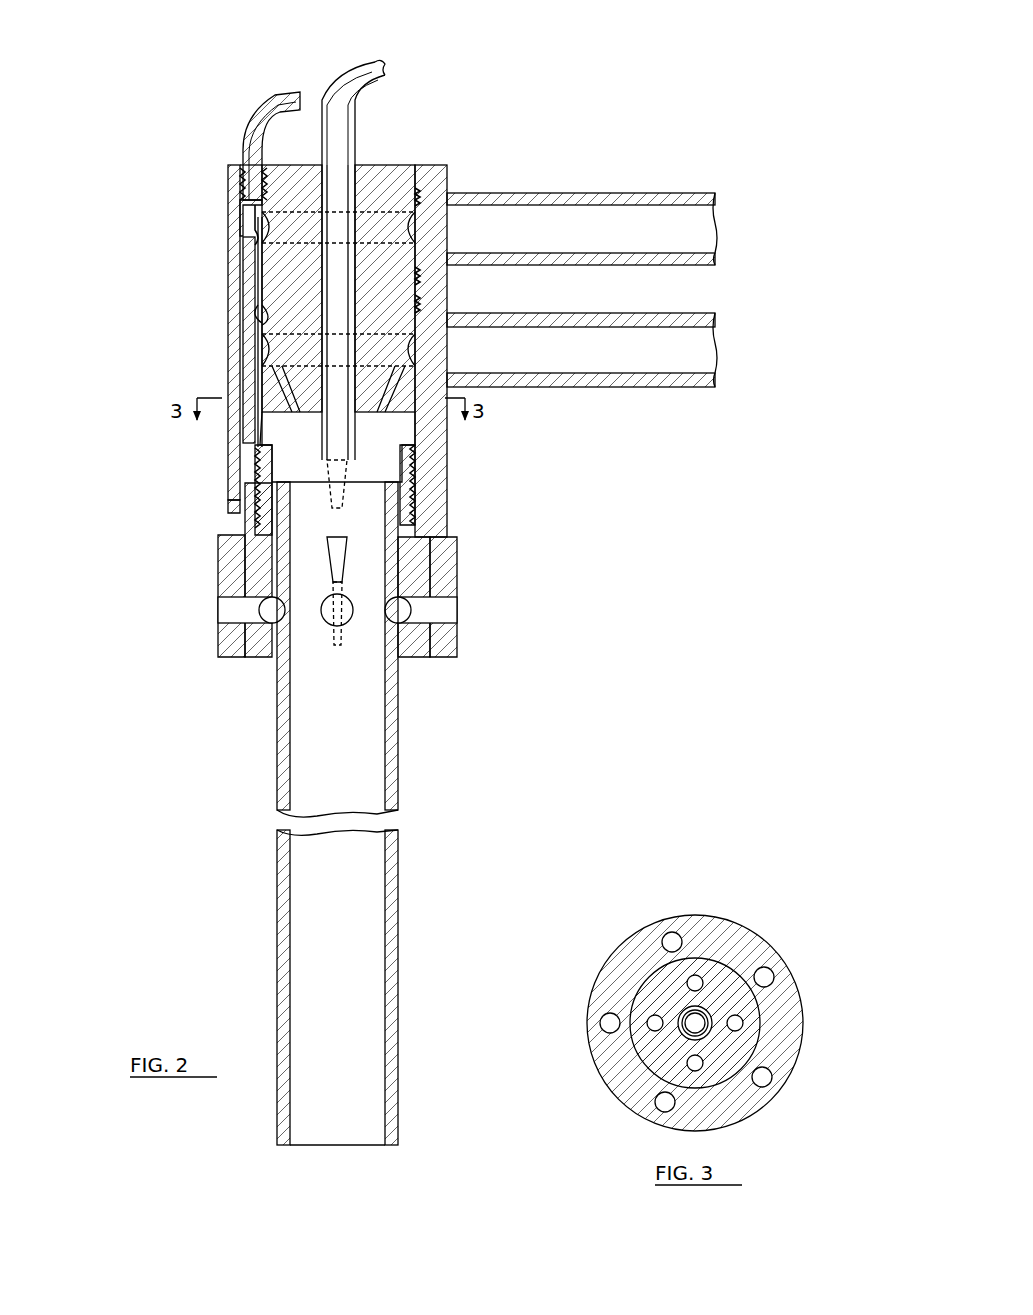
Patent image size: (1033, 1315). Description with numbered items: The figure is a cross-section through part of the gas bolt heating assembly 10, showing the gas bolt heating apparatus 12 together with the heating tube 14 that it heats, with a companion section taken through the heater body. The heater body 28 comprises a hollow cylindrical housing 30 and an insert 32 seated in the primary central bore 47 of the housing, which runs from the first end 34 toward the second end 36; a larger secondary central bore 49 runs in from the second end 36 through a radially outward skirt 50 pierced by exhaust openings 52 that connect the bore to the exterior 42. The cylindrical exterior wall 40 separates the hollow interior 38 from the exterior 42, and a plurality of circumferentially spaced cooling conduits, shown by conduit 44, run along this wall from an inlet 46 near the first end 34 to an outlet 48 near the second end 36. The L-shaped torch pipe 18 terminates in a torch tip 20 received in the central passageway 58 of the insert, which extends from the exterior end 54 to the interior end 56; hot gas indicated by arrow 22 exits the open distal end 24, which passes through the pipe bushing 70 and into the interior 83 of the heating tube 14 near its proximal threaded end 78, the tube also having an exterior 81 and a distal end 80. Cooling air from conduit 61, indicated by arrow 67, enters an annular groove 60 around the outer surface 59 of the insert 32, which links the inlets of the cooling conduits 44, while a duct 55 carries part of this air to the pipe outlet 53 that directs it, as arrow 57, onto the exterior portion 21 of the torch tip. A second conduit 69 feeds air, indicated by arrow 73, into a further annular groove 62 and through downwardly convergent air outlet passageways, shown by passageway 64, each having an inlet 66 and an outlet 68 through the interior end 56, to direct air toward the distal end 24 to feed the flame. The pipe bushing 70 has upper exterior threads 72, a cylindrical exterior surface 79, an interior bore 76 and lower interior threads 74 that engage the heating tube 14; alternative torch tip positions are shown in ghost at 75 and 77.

In FIG. 2, the gas bolt heating assembly 10 is at (88, 115).
In FIG. 3, the gas bolt heating assembly 10 is at (750, 835).
In FIG. 2, the gas bolt heating apparatus 12 is at (138, 228).
In FIG. 3, the gas bolt heating apparatus 12 is at (800, 873).
In FIG. 2, the heating tube 14 is at (392, 888).
In FIG. 2, the torch pipe 18 is at (332, 78).
In FIG. 2, the torch tip 20 is at (350, 98).
In FIG. 3, the torch tip 20 is at (688, 1010).
In FIG. 2, the exterior portion of torch tip 21 is at (356, 70).
In FIG. 2, the hot gas flow arrow 22 is at (337, 592).
In FIG. 2, the distal end of torch tip 24 is at (330, 600).
In FIG. 2, the heater body 28 is at (226, 170).
In FIG. 3, the heater body 28 is at (768, 937).
In FIG. 2, the housing 30 is at (432, 458).
In FIG. 3, the housing 30 is at (772, 977).
In FIG. 2, the insert 32 is at (278, 258).
In FIG. 3, the insert 32 is at (740, 1020).
In FIG. 2, the first end of housing 34 is at (440, 165).
In FIG. 2, the second end of housing 36 is at (440, 640).
In FIG. 2, the hollow interior of housing 38 is at (415, 433).
In FIG. 2, the exterior wall 40 is at (433, 505).
In FIG. 3, the exterior wall 40 is at (634, 982).
In FIG. 2, the exterior of heater body 42 is at (425, 478).
In FIG. 2, the cooling conduit 44 is at (243, 432).
In FIG. 3, the cooling conduit 44 is at (612, 1020).
In FIG. 2, the inlet of cooling conduit 46 is at (245, 212).
In FIG. 2, the primary central bore 47 is at (415, 165).
In FIG. 2, the outlet of cooling conduit 48 is at (228, 503).
In FIG. 2, the secondary central bore 49 is at (410, 645).
In FIG. 2, the skirt 50 is at (459, 590).
In FIG. 2, the exhaust openings 52 is at (440, 613).
In FIG. 2, the pipe outlet 53 is at (258, 105).
In FIG. 2, the exterior end of insert 54 is at (400, 165).
In FIG. 2, the duct 55 is at (255, 203).
In FIG. 2, the interior end of insert 56 is at (262, 450).
In FIG. 2, the cooling air flow arrow 57 is at (318, 102).
In FIG. 2, the central passageway 58 is at (345, 300).
In FIG. 3, the central passageway 58 is at (703, 1010).
In FIG. 2, the outer surface of insert 59 is at (447, 282).
In FIG. 2, the annular groove 60 is at (296, 165).
In FIG. 2, the conduit 61 is at (605, 193).
In FIG. 2, the further annular groove 62 is at (270, 317).
In FIG. 2, the air outlet passageway 64 is at (272, 386).
In FIG. 3, the air outlet passageway 64 is at (655, 1027).
In FIG. 2, the inlet of air outlet passageway 66 is at (262, 312).
In FIG. 2, the cooling air flow arrow 67 is at (537, 228).
In FIG. 2, the outlet of air outlet passageway 68 is at (290, 440).
In FIG. 2, the conduit 69 is at (548, 313).
In FIG. 2, the pipe bushing 70 is at (417, 522).
In FIG. 2, the upper exterior threads 72 is at (420, 470).
In FIG. 2, the flame air flow arrow 73 is at (537, 350).
In FIG. 2, the lower interior threads 74 is at (432, 535).
In FIG. 2, the torch tip in ghost 75 is at (347, 498).
In FIG. 2, the interior bore of pipe bushing 76 is at (405, 447).
In FIG. 2, the torch tip in ghost 77 is at (330, 625).
In FIG. 2, the proximal threaded end of heating tube 78 is at (415, 488).
In FIG. 2, the cylindrical exterior surface of pipe bushing 79 is at (265, 520).
In FIG. 2, the distal end of heating tube 80 is at (285, 1148).
In FIG. 2, the exterior of heating tube 81 is at (398, 722).
In FIG. 2, the interior of heating tube 83 is at (350, 769).